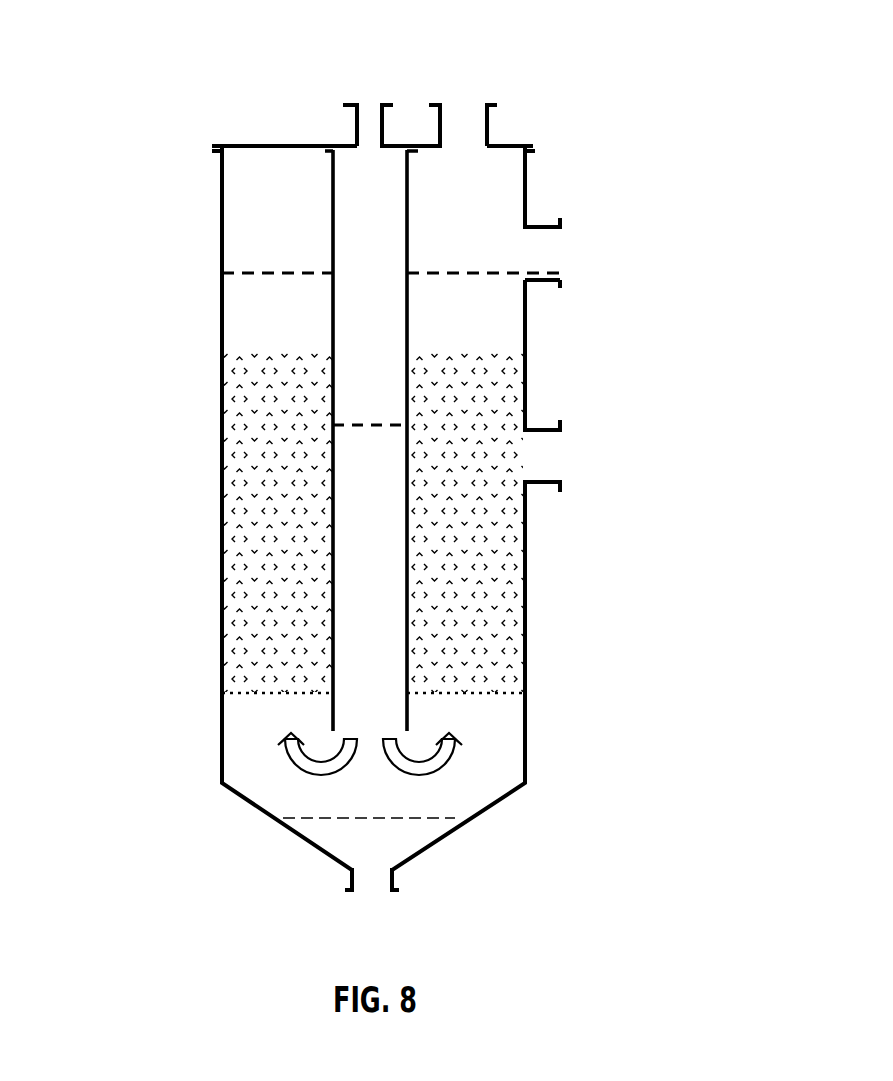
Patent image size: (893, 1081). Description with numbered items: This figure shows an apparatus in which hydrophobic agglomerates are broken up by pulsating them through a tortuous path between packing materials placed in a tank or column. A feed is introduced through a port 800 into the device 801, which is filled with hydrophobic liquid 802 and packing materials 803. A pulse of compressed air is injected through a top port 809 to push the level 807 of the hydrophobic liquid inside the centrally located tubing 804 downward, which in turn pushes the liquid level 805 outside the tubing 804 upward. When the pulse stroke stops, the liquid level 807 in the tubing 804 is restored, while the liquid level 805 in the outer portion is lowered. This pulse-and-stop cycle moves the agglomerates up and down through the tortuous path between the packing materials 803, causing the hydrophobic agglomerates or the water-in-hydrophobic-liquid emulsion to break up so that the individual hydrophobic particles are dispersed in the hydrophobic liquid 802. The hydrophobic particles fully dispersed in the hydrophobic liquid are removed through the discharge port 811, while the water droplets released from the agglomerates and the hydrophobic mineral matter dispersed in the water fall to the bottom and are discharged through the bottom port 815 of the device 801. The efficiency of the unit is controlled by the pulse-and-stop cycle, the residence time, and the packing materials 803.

The port 800 is at (573, 462).
The device 801 is at (222, 490).
The hydrophobic liquid 802 is at (512, 318).
The packing materials 803 is at (265, 553).
The centrally located tubing 804 is at (327, 210).
The liquid level 805 is at (458, 263).
The level 807 is at (367, 417).
The top port 809 is at (372, 93).
The discharge port 811 is at (568, 263).
The bottom port 815 is at (372, 887).